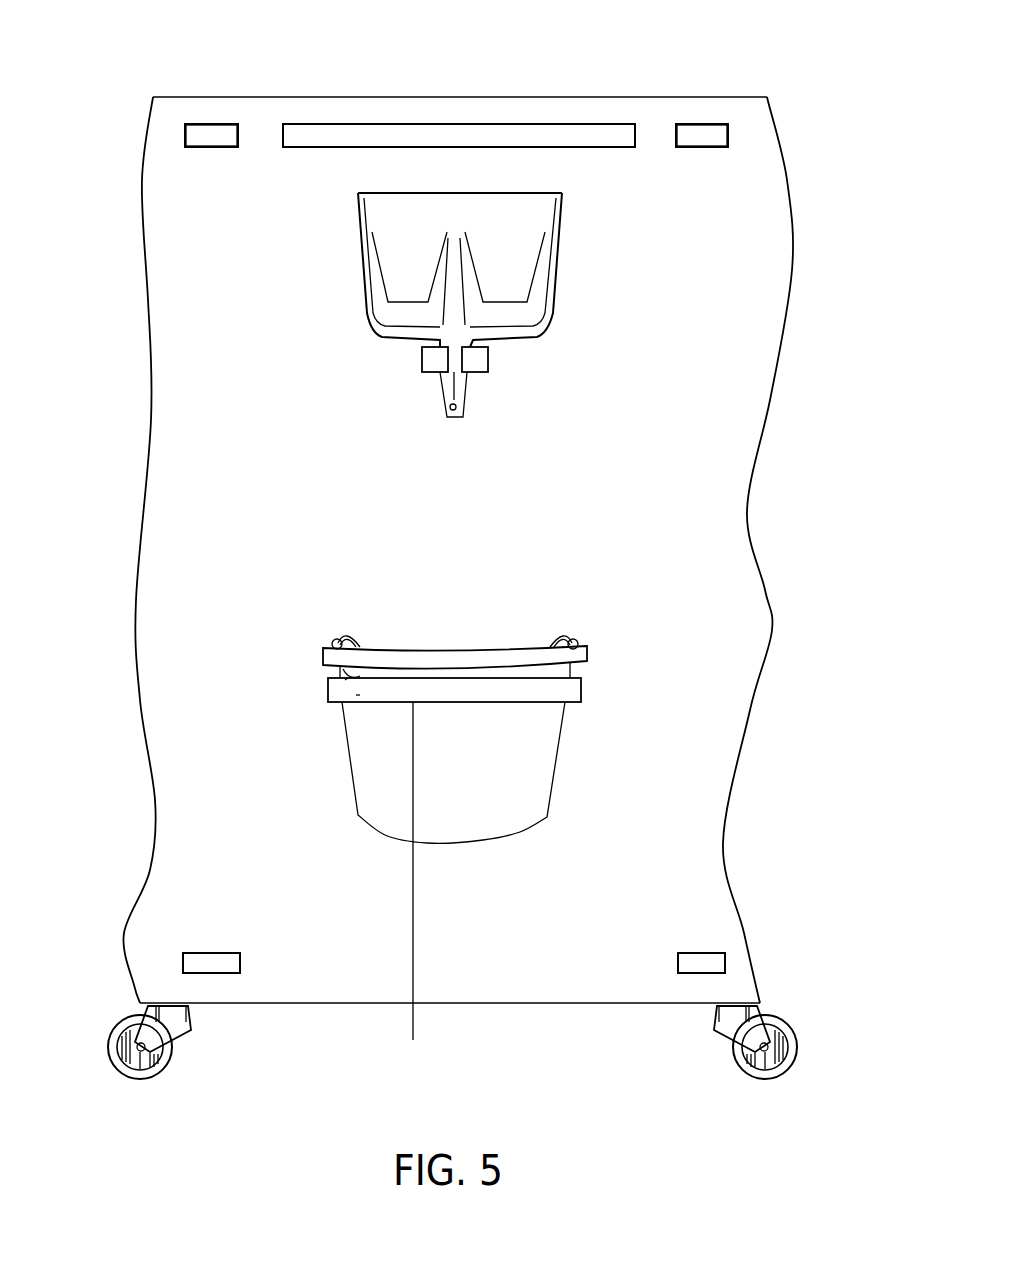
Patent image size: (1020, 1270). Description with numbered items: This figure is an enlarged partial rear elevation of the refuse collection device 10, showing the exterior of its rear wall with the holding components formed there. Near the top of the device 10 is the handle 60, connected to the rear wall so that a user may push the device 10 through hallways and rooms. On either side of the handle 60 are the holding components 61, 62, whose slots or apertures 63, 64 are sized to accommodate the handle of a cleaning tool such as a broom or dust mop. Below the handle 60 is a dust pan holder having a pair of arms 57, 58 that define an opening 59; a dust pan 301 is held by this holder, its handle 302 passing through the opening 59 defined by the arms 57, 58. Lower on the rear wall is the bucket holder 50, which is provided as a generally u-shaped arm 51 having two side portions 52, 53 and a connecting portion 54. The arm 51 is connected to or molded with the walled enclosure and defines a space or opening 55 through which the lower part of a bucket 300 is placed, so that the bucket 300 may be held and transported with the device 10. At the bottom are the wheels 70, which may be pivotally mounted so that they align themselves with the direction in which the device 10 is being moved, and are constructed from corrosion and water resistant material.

The refuse collection device 10 is at (807, 87).
The bucket holder 50 is at (513, 713).
The u-shaped arm 51 is at (410, 889).
The side portion 52 is at (333, 693).
The side portion 53 is at (581, 688).
The connecting portion 54 is at (358, 697).
The opening 55 is at (347, 680).
The arm 57 is at (422, 362).
The arm 58 is at (478, 360).
The opening 59 is at (455, 404).
The handle 60 is at (444, 101).
The holding component 61 is at (722, 139).
The holding component 62 is at (190, 138).
The aperture 63 is at (705, 124).
The aperture 64 is at (212, 124).
The wheels 70 is at (108, 1033).
The bucket 300 is at (587, 657).
The dust pan 301 is at (400, 248).
The handle 302 is at (443, 397).